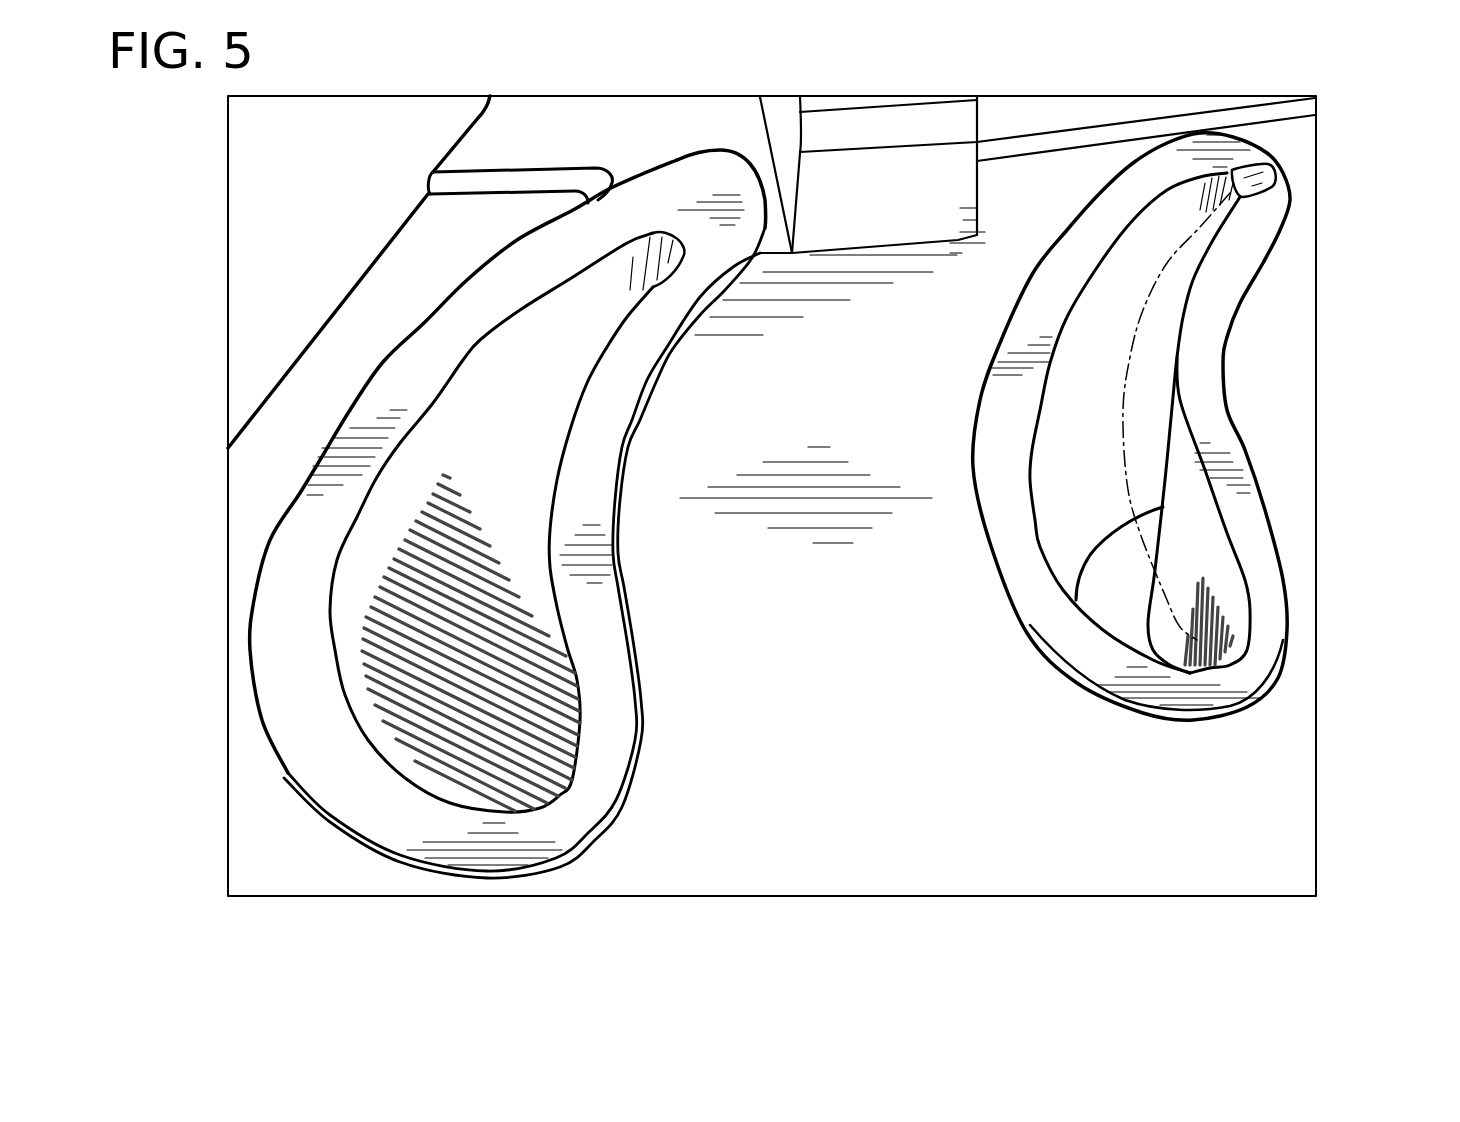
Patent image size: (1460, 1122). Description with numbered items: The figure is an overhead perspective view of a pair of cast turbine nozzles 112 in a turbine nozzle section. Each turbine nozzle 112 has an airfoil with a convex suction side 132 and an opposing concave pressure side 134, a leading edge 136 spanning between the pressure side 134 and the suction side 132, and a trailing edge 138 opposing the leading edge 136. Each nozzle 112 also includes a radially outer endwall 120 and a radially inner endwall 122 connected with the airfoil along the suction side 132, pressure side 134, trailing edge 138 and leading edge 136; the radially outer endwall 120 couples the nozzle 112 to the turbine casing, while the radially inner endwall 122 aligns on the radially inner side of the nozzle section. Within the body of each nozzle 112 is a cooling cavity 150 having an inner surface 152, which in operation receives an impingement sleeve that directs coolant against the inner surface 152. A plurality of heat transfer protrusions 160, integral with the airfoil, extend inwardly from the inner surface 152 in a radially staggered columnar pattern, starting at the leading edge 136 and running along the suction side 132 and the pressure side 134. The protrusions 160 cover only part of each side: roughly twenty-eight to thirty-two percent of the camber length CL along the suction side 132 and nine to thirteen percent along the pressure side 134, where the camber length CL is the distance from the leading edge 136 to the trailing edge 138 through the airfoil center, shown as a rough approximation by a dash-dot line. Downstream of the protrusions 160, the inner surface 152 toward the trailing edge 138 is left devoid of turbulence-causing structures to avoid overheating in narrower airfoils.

The turbine nozzle 112 is at (283, 790).
The radially outer endwall 120 is at (771, 272).
The radially inner endwall 122 is at (309, 385).
The suction side 132 is at (610, 653).
The pressure side 134 is at (288, 567).
The leading edge 136 is at (510, 872).
The trailing edge 138 is at (693, 212).
The cooling cavity 150 is at (775, 714).
The inner surface 152 is at (580, 763).
The heat transfer protrusions 160 is at (483, 757).
The camber length CL is at (1123, 450).